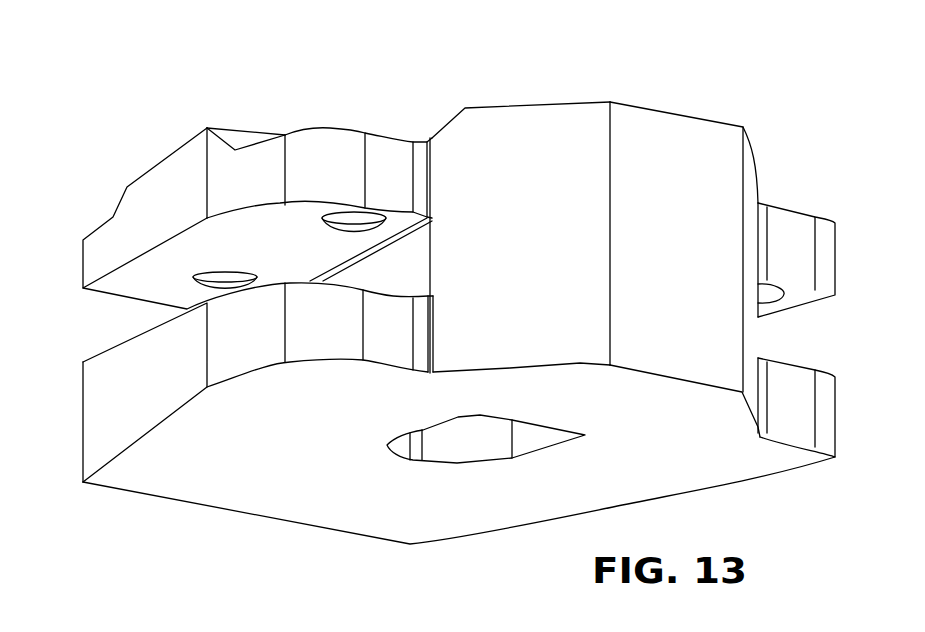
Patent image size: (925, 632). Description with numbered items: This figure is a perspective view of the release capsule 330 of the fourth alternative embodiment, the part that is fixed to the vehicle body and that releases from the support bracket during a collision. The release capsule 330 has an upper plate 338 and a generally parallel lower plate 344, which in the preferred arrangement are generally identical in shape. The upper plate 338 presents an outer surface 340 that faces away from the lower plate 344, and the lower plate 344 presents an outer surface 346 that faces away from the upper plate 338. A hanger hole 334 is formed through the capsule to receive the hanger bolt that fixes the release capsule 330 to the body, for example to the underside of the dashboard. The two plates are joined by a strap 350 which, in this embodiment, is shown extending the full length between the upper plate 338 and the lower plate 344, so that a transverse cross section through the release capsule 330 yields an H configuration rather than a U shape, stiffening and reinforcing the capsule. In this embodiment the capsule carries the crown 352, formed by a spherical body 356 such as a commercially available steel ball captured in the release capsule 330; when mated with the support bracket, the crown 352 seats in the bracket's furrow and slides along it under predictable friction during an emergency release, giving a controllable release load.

The release capsule 330 is at (595, 101).
The hanger hole 334 is at (458, 448).
The upper plate 338 is at (83, 257).
The outer surface 340 is at (250, 138).
The lower plate 344 is at (83, 412).
The outer surface 346 is at (420, 513).
The strap 350 is at (717, 138).
The crown 352 is at (225, 290).
The spherical body 356 is at (768, 292).